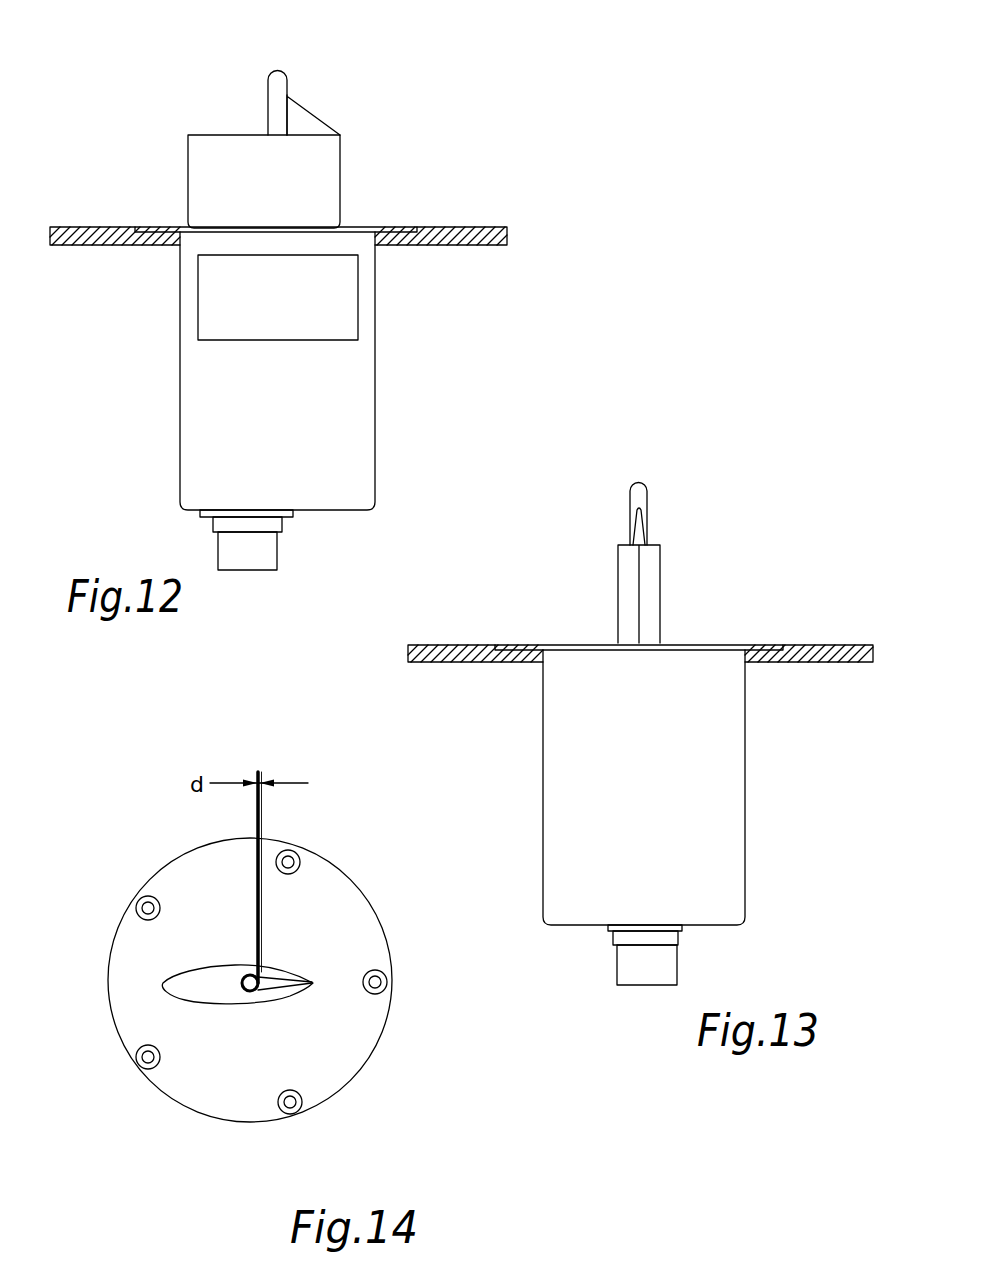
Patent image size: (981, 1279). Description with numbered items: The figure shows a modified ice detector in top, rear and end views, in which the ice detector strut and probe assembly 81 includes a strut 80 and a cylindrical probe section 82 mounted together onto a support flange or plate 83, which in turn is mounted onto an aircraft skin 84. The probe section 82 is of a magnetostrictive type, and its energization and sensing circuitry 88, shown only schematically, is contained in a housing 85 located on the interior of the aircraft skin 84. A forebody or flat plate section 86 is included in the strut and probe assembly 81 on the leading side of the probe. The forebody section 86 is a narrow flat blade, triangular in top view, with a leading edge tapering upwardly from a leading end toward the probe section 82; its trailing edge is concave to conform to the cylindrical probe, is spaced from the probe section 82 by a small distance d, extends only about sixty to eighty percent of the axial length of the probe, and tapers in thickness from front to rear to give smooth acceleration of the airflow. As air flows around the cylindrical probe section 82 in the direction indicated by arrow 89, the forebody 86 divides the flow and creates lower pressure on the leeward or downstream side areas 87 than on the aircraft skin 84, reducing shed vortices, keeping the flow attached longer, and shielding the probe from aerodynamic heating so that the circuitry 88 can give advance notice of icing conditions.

In FIG. 12, the strut 80 is at (325, 188).
In FIG. 13, the strut 80 is at (630, 598).
In FIG. 14, the strut 80 is at (220, 995).
In FIG. 12, the ice detector strut and probe assembly 81 is at (247, 110).
In FIG. 13, the ice detector strut and probe assembly 81 is at (613, 513).
In FIG. 14, the ice detector strut and probe assembly 81 is at (203, 988).
In FIG. 12, the cylindrical probe section 82 is at (288, 72).
In FIG. 13, the cylindrical probe section 82 is at (643, 483).
In FIG. 14, the cylindrical probe section 82 is at (261, 991).
In FIG. 12, the support flange or plate 83 is at (150, 228).
In FIG. 13, the support flange or plate 83 is at (707, 642).
In FIG. 12, the aircraft skin 84 is at (460, 228).
In FIG. 13, the aircraft skin 84 is at (472, 643).
In FIG. 12, the housing 85 is at (375, 335).
In FIG. 13, the housing 85 is at (572, 760).
In FIG. 12, the forebody or flat plate section 86 is at (312, 110).
In FIG. 14, the forebody or flat plate section 86 is at (287, 988).
In FIG. 13, the leeward or downstream side areas 87 is at (645, 515).
In FIG. 14, the leeward or downstream side areas 87 is at (258, 975).
In FIG. 12, the energization and sensing circuitry 88 is at (197, 310).
In FIG. 12, the arrow 89 is at (372, 117).
In FIG. 14, the arrow 89 is at (325, 982).